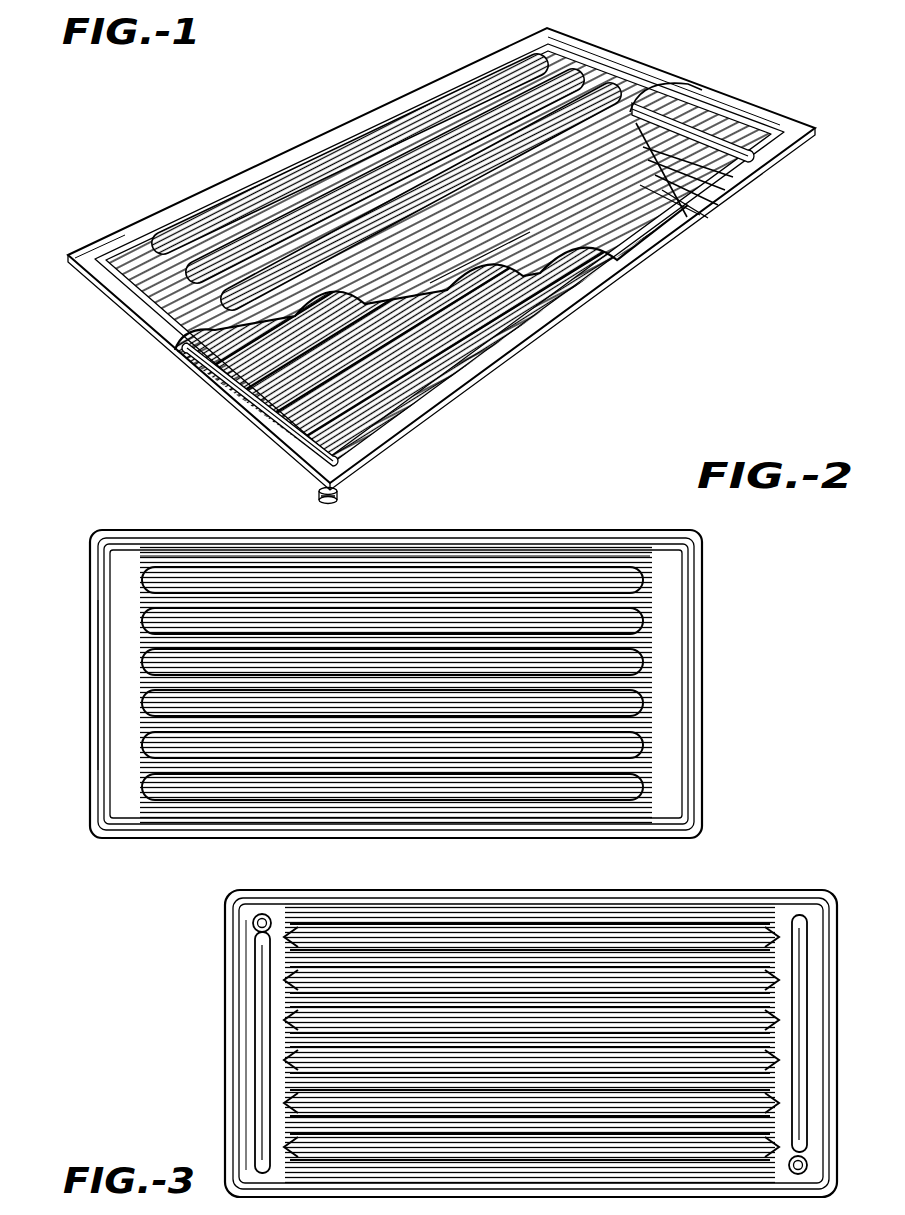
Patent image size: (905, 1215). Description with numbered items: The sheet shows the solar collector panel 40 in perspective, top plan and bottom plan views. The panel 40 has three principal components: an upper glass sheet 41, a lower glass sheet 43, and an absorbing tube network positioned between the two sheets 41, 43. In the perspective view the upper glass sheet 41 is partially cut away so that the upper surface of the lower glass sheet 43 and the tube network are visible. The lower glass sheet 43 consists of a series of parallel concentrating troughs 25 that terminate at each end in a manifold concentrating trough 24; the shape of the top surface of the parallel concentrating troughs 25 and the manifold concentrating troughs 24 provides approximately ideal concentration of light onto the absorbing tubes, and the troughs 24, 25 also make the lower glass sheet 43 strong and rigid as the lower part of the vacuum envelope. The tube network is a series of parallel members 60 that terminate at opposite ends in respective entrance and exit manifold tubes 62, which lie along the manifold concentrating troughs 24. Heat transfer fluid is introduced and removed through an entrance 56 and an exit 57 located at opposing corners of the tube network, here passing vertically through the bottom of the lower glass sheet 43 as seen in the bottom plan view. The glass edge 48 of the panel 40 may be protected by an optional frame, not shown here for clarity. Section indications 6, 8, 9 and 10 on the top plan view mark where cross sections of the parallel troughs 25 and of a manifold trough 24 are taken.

In FIG. 1, the solar collector panel 40 is at (270, 143).
In FIG. 2, the solar collector panel 40 is at (718, 590).
In FIG. 3, the solar collector panel 40 is at (215, 1058).
In FIG. 1, the upper glass sheet 41 is at (600, 68).
In FIG. 2, the upper glass sheet 41 is at (580, 548).
In FIG. 1, the lower glass sheet 43 is at (753, 108).
In FIG. 3, the lower glass sheet 43 is at (232, 1013).
In FIG. 1, the glass edge 48 is at (125, 232).
In FIG. 2, the glass edge 48 is at (533, 528).
In FIG. 1, the entrance and exit manifold tube 62 is at (722, 140).
In FIG. 1, the manifold concentrating trough 24 is at (710, 157).
In FIG. 3, the manifold concentrating trough 24 is at (272, 1120).
In FIG. 1, the parallel concentrating trough 25 is at (478, 323).
In FIG. 2, the parallel concentrating trough 25 is at (392, 683).
In FIG. 3, the parallel concentrating trough 25 is at (752, 907).
In FIG. 1, the parallel member 60 is at (527, 313).
In FIG. 1, the entrance 56 is at (338, 497).
In FIG. 3, the entrance 56 is at (253, 925).
In FIG. 3, the exit 57 is at (808, 1160).
In FIG. 2, the section line 6- 6 is at (182, 710).
In FIG. 2, the section line 8- 8 is at (647, 725).
In FIG. 2, the section line 9- 9 is at (640, 717).
In FIG. 2, the section line 10- 10 is at (640, 703).